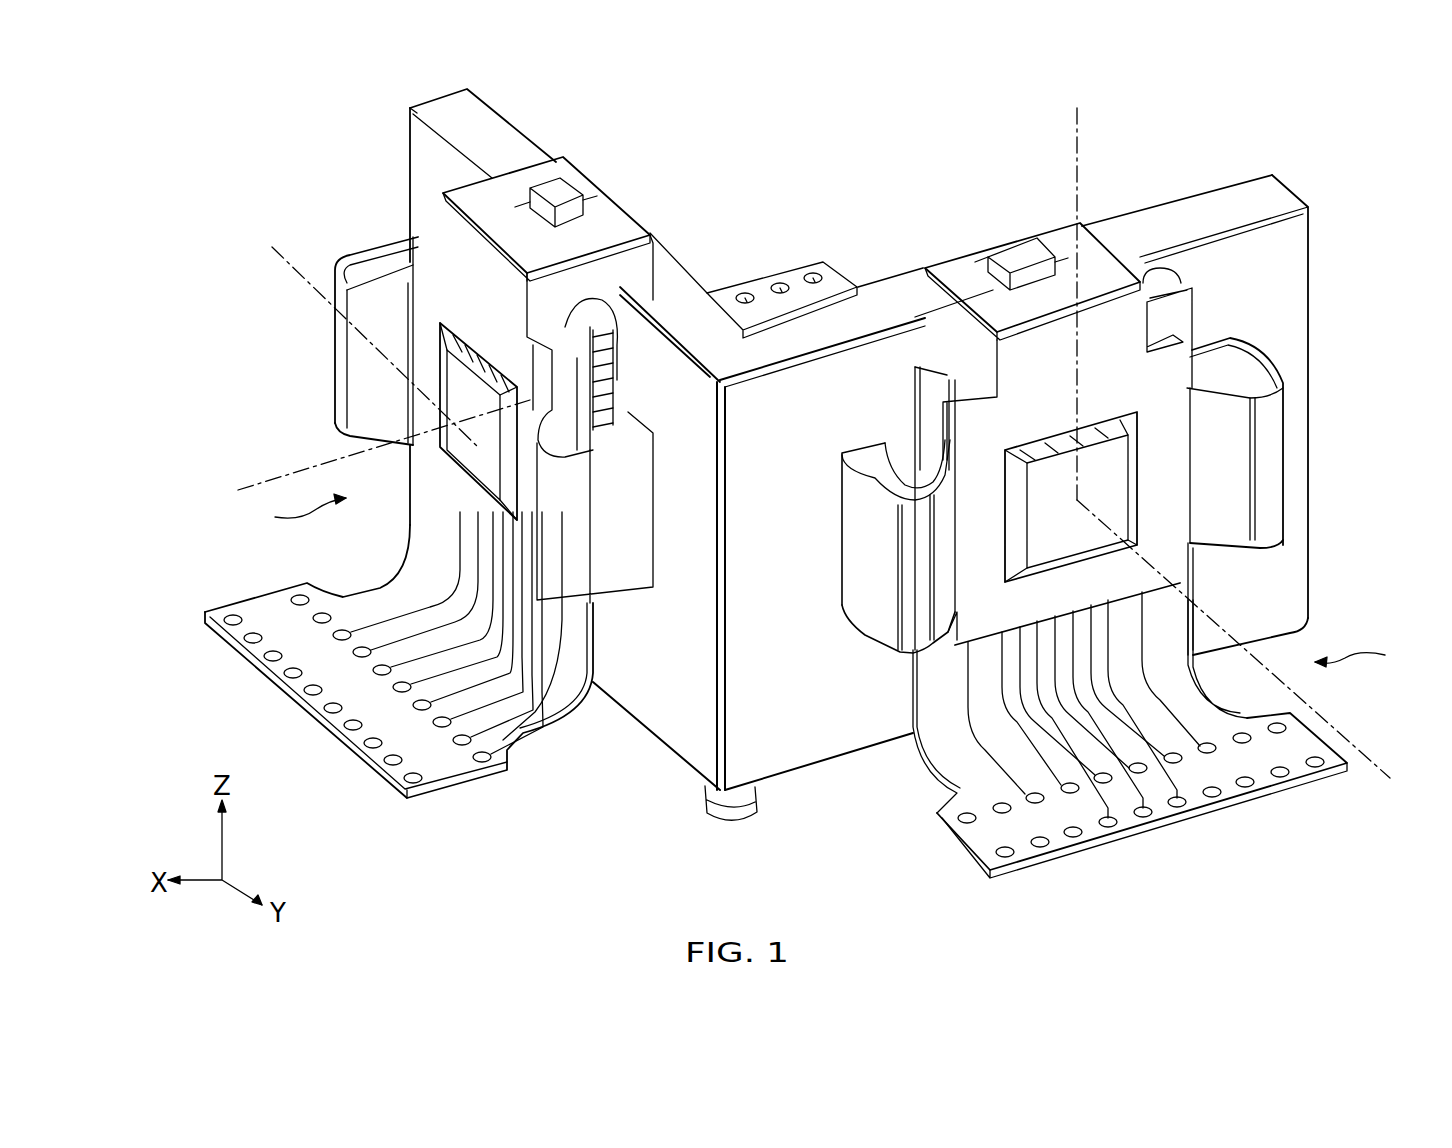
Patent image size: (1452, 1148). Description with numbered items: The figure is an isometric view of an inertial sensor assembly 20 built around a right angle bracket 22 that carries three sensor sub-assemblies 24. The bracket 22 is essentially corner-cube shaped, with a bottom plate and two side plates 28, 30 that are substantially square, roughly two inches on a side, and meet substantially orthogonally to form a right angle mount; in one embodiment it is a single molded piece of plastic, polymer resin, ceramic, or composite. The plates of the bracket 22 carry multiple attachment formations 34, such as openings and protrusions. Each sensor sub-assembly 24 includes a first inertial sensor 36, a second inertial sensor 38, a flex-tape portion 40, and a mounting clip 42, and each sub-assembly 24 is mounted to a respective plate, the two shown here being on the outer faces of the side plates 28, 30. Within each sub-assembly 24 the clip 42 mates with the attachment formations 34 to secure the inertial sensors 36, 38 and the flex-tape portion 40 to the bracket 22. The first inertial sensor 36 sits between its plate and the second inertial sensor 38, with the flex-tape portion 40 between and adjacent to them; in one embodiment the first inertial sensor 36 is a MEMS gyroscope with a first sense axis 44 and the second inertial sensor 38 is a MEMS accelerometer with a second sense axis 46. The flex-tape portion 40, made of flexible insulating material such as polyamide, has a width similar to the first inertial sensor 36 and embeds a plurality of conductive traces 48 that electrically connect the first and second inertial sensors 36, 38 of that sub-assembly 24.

The inertial sensor assembly 20 is at (724, 137).
The right angle bracket 22 is at (1236, 190).
The sensor sub-assembly 24 is at (832, 584).
The side plate 28 is at (1297, 570).
The side plate 30 is at (445, 107).
The attachment formation 34 is at (567, 193).
The first inertial sensor 36 is at (622, 360).
The second inertial sensor 38 is at (440, 413).
The flex-tape portion 40 is at (275, 612).
The clip 42 is at (387, 247).
The first sense axis 44 is at (287, 262).
The second sense axis 46 is at (302, 468).
The conductive trace 48 is at (538, 696).